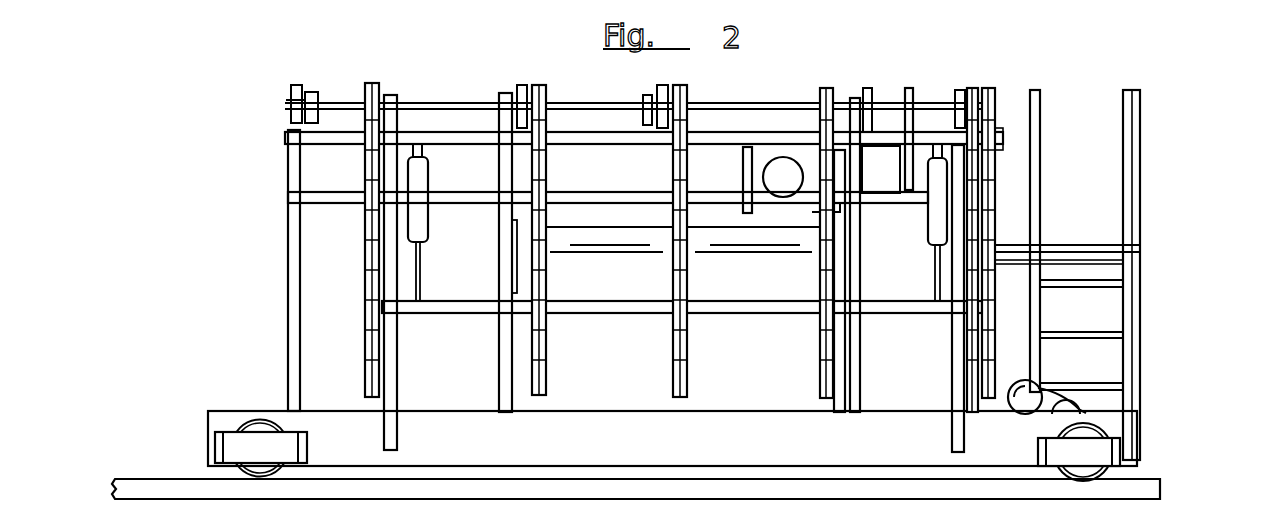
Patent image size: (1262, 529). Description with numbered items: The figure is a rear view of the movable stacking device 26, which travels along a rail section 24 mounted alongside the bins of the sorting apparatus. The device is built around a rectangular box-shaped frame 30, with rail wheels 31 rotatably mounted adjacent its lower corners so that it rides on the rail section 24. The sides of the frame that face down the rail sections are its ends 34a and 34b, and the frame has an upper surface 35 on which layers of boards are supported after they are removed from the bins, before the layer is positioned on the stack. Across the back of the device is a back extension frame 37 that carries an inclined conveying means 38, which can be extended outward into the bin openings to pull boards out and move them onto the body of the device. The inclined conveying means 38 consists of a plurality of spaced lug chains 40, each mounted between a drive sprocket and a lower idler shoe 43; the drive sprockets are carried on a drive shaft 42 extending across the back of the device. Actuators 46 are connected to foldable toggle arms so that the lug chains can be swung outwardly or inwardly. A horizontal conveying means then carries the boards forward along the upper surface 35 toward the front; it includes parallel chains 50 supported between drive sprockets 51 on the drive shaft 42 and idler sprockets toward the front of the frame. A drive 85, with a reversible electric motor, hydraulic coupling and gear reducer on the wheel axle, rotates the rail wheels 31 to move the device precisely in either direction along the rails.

The rail section 24 is at (908, 488).
The movable stacking device 26 is at (1172, 200).
The frame 30 is at (1135, 286).
The rail wheels 31 is at (270, 430).
The end 34a is at (290, 307).
The end 34b is at (1140, 334).
The upper surface 35 is at (963, 92).
The back extension frame 37 is at (430, 300).
The inclined conveying means 38 is at (362, 357).
The lug chains 40 is at (378, 370).
The drive shaft 42 is at (745, 108).
The lower idler shoe 43 is at (547, 392).
The actuators 46 is at (428, 222).
The parallel chains 50 is at (533, 74).
The drive sprockets 51 is at (926, 92).
The drive 85 is at (1005, 405).